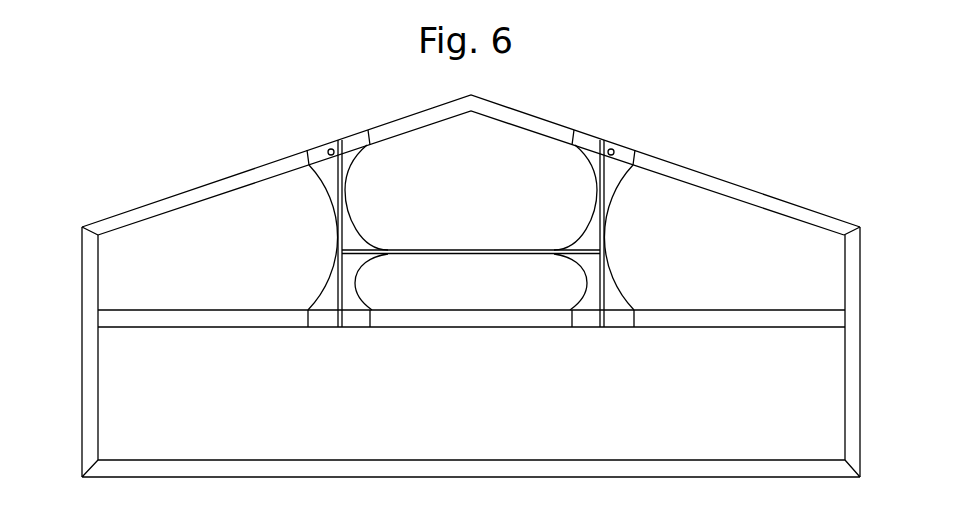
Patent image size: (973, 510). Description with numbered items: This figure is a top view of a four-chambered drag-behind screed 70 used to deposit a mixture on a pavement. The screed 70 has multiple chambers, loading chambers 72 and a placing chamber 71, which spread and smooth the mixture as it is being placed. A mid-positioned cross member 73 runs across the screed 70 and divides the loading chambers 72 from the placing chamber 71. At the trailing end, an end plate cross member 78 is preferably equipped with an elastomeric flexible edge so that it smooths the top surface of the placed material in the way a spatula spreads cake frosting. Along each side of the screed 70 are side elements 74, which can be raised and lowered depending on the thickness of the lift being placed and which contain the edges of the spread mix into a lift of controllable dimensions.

The screed 70 is at (470, 280).
The placing chamber 71 is at (478, 390).
The loading chamber 72 is at (480, 190).
The mid-positioned cross member 73 is at (723, 343).
The side elements 74 is at (75, 369).
The end plate cross member 78 is at (663, 446).